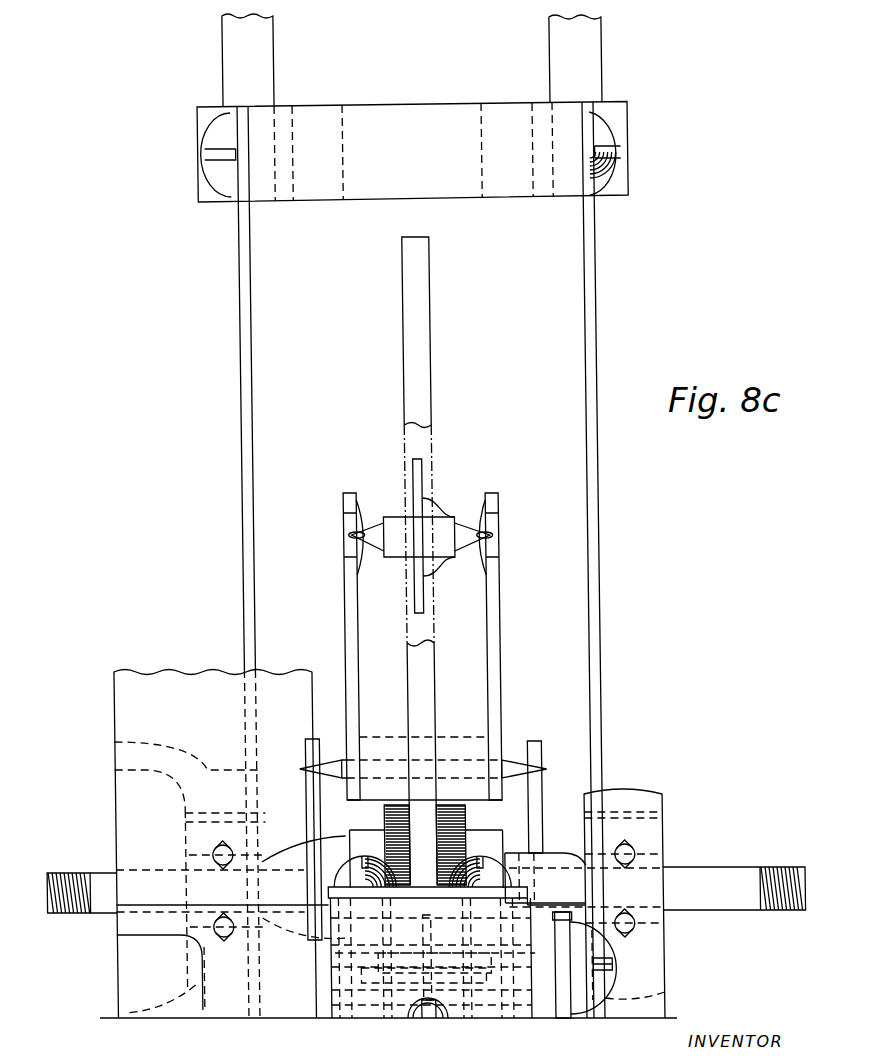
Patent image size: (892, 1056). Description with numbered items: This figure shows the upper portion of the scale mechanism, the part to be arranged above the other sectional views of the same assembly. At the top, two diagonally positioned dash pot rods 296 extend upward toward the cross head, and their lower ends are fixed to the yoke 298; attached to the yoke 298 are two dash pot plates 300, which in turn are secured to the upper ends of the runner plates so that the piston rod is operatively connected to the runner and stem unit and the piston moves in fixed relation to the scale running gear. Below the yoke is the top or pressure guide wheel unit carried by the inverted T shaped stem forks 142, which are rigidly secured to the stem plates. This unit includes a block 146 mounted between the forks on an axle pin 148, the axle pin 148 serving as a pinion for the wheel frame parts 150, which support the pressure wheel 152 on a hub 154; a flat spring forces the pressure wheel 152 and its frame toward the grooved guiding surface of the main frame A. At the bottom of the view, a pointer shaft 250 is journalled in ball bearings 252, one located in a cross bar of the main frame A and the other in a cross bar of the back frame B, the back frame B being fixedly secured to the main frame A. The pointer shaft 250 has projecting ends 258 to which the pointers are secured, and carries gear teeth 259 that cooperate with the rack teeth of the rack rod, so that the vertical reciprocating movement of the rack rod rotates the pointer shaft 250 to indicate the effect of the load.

The dash pot rods 296 is at (264, 73).
The yoke 298 is at (412, 152).
The dash pot plates 300 is at (246, 375).
The block 146 is at (448, 745).
The pressure wheel 152 is at (421, 472).
The hub 154 is at (462, 540).
The wheel frame parts 150 is at (496, 640).
The axle pin 148 is at (514, 758).
The stem forks 142 is at (530, 797).
The main frame A is at (192, 688).
The back frame B is at (630, 796).
The projecting ends 258 is at (100, 908).
The ball bearings 252 is at (188, 838).
The pointer shaft 250 is at (550, 858).
The gear teeth 259 is at (381, 811).